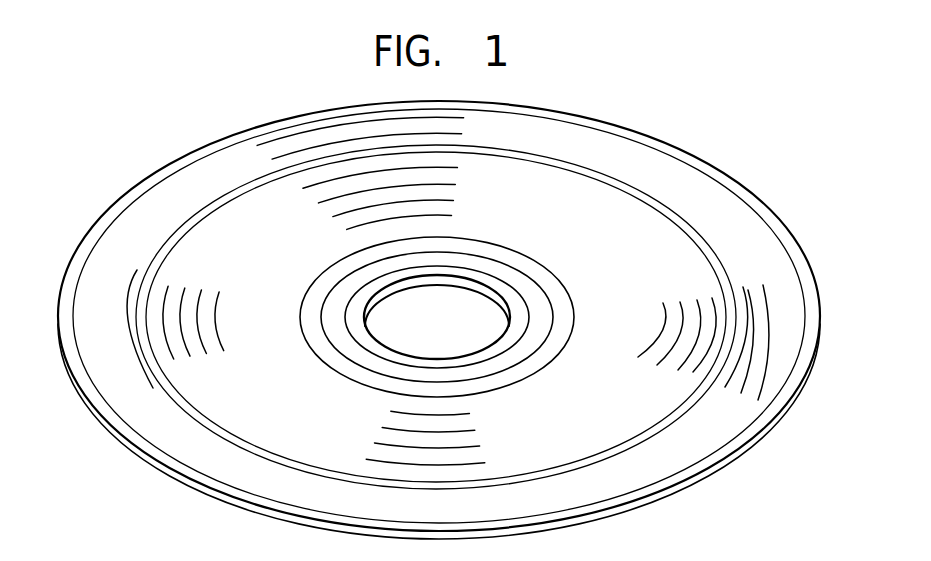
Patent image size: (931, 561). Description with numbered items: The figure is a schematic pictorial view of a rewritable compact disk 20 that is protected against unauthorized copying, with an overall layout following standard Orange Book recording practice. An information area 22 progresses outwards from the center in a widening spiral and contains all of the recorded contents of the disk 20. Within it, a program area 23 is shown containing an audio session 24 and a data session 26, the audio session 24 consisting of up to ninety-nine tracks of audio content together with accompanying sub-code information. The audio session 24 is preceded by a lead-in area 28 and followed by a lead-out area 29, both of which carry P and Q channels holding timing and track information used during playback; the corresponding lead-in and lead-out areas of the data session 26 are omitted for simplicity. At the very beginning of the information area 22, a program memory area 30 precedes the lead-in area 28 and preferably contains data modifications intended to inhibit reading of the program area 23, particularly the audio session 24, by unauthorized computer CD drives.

The rewritable compact disk 20 is at (700, 108).
The information area 22 is at (755, 209).
The program area 23 is at (525, 172).
The audio session 24 is at (685, 281).
The data session 26 is at (770, 274).
The lead-in area 28 is at (547, 285).
The lead-out area 29 is at (643, 437).
The program memory area 30 is at (508, 357).